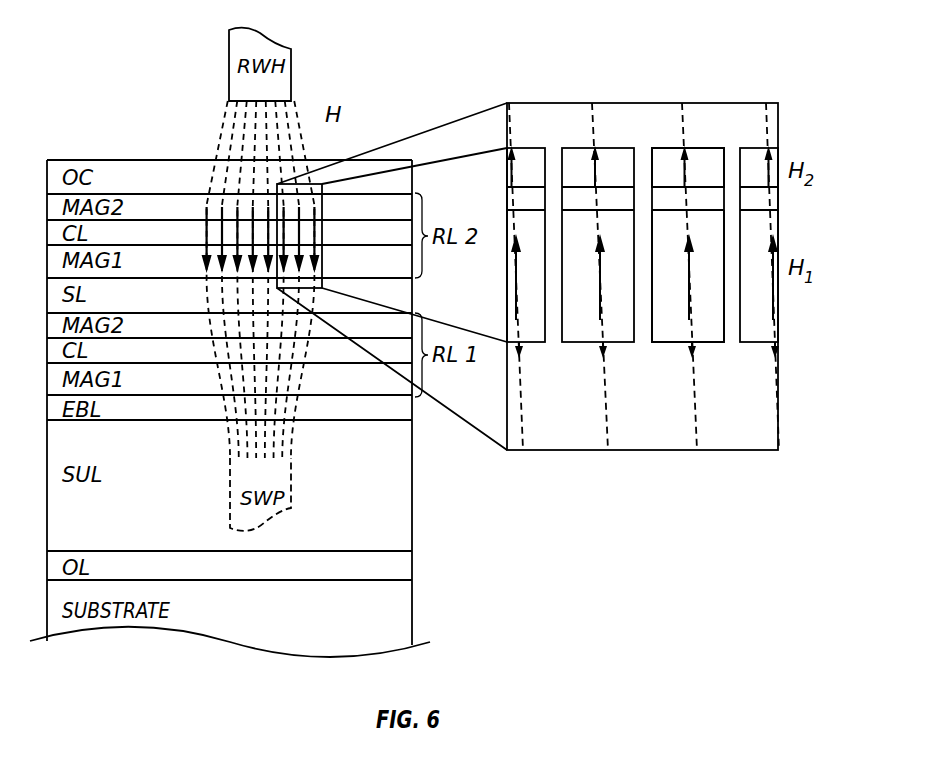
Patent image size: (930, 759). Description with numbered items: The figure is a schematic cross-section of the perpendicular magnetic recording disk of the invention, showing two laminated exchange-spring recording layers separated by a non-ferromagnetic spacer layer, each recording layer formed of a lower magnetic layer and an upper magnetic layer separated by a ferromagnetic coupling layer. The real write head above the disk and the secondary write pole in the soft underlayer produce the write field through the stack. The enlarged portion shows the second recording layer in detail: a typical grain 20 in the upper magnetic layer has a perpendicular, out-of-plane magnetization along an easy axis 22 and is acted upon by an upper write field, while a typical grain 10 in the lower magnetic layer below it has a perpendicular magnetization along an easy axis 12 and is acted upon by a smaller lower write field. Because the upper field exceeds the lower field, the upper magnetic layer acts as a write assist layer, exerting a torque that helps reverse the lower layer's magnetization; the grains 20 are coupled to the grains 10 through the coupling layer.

The grain in MAG1 10 is at (700, 334).
The easy axis of MAG1 grain 12 is at (680, 308).
The grain in MAG2 20 is at (700, 152).
The easy axis of MAG2 grain 22 is at (686, 172).